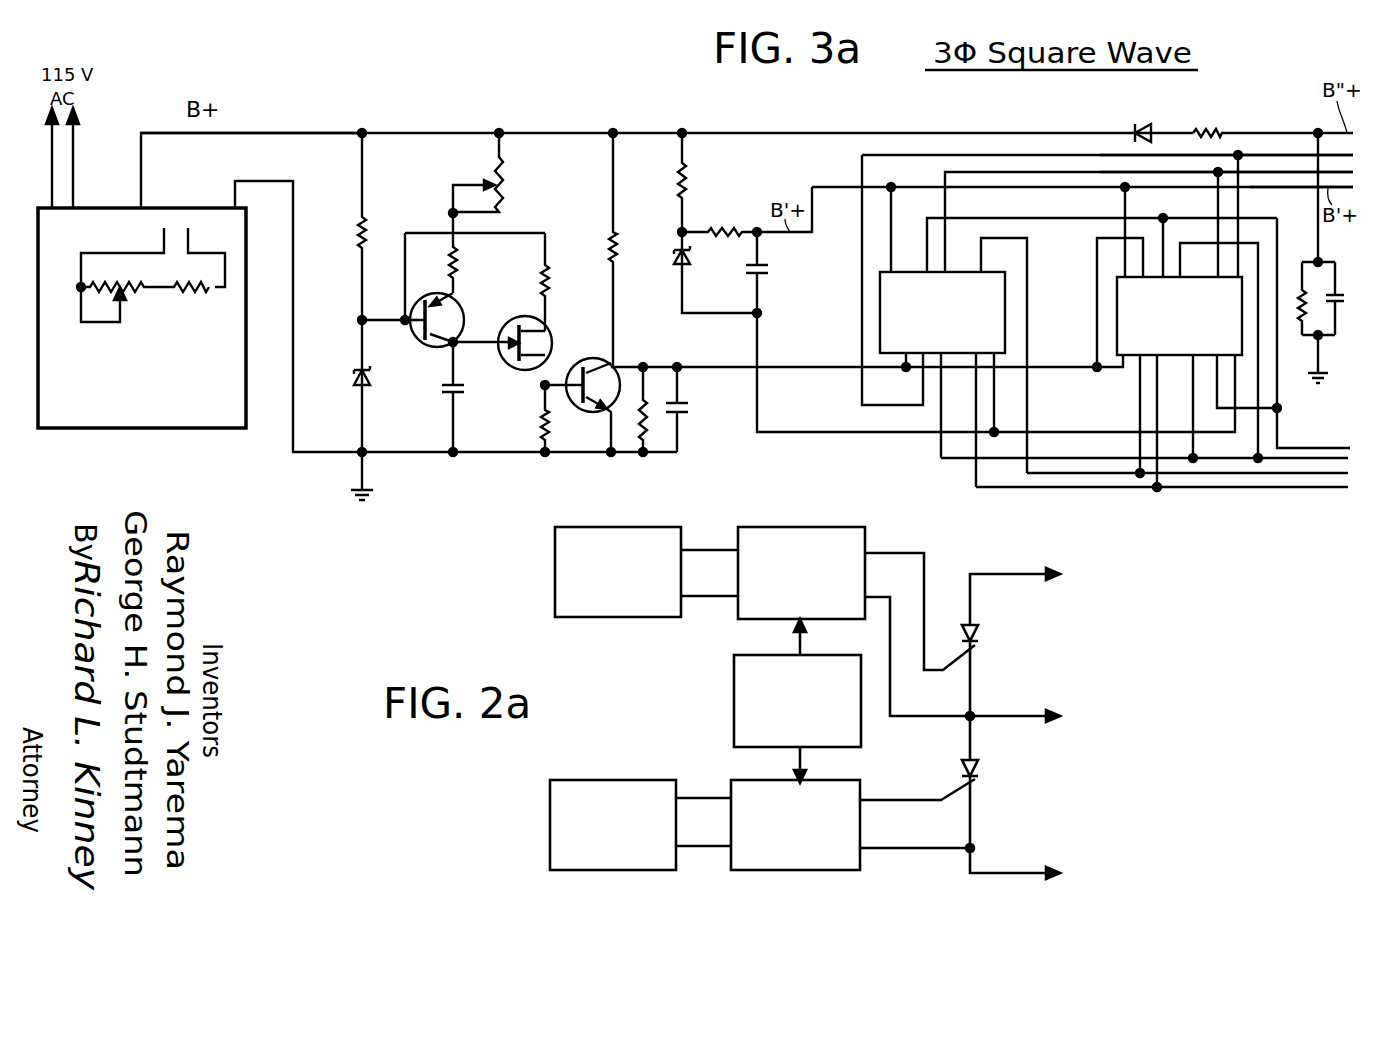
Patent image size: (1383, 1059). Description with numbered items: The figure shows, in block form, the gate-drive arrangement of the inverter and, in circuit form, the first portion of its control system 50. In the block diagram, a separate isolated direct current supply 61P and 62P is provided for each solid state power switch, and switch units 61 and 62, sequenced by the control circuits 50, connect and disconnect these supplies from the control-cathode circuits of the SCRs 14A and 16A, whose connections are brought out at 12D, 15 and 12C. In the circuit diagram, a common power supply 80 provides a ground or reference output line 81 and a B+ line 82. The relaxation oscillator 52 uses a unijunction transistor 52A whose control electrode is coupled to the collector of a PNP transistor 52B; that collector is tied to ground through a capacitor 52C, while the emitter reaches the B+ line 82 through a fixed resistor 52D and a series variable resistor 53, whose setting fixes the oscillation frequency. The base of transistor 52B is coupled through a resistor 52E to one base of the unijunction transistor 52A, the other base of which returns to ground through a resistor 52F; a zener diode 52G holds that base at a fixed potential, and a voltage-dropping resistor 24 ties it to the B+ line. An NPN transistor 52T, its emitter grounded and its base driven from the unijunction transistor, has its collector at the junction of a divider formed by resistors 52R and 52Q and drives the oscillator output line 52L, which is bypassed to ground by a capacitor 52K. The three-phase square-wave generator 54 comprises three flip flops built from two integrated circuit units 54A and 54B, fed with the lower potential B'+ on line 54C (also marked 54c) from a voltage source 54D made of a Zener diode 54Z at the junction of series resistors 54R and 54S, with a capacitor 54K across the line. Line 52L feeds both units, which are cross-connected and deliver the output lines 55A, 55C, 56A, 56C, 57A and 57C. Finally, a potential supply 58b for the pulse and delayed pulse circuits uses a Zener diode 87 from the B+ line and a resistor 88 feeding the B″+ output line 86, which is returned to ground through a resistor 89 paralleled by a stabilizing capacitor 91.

In FIG. 3A, the control circuit 50 is at (634, 118).
In FIG. 2A, the control circuit 50 is at (761, 701).
In FIG. 3A, the oscillator 52 is at (539, 204).
In FIG. 3A, the three-phase square-wave generator 54 is at (1107, 242).
In FIG. 3A, the power supply 80 is at (142, 337).
In FIG. 3A, the output line 81 is at (454, 327).
In FIG. 3A, the B+ line 82 is at (251, 147).
In FIG. 3A, the resistor 24 is at (342, 316).
In FIG. 3A, the zener break-down diode 52G is at (387, 388).
In FIG. 3A, the variable resistor 53 is at (498, 175).
In FIG. 3A, the fixed resistor 52D is at (482, 253).
In FIG. 3A, the PNP transistor 52B is at (438, 309).
In FIG. 3A, the capacitor 52C is at (475, 397).
In FIG. 3A, the unijunction transistor 52A is at (502, 351).
In FIG. 3A, the resistor 52E is at (569, 282).
In FIG. 3A, the resistor 52R is at (586, 250).
In FIG. 3A, the NPN transistor 52T is at (580, 393).
In FIG. 3A, the resistor 52F is at (566, 418).
In FIG. 3A, the oscillator output line 52L is at (867, 350).
In FIG. 3A, the resistor 52Q is at (674, 424).
In FIG. 3A, the capacitor 52K is at (700, 409).
In FIG. 3A, the resistor 54R is at (655, 184).
In FIG. 3A, the voltage source 54D is at (719, 212).
In FIG. 3A, the Zener diode 54Z is at (715, 272).
In FIG. 3A, the capacitor 54K is at (990, 332).
In FIG. 3A, the resistor 54S is at (778, 195).
In FIG. 3A, the B'+ line 54c is at (1078, 167).
In FIG. 3A, the integrated circuit unit 54A is at (1116, 327).
In FIG. 3A, the integrated circuit unit 54B is at (1187, 319).
In FIG. 3A, the Zener diode 87 is at (1137, 125).
In FIG. 3A, the resistor 88 is at (1259, 123).
In FIG. 3A, the output bus 58b is at (1284, 114).
In FIG. 3A, the output line 55A is at (1197, 124).
In FIG. 3A, the output line 55C is at (1226, 141).
In FIG. 3A, the B″+ output line 86 is at (1317, 185).
In FIG. 3A, the B'+ line 54C is at (1301, 202).
In FIG. 3A, the resistor 89 is at (1310, 306).
In FIG. 3A, the voltage stabilizing capacitor 91 is at (1335, 315).
In FIG. 3A, the output line 56A is at (1311, 333).
In FIG. 3A, the output line 56C is at (1144, 500).
In FIG. 3A, the output line 57A is at (1162, 503).
In FIG. 3A, the output line 57C is at (1187, 496).
In FIG. 2A, the direct current supply 61P is at (646, 549).
In FIG. 2A, the switch unit 61 is at (856, 598).
In FIG. 2A, the direct current supply 62P is at (640, 805).
In FIG. 2A, the switch unit 62 is at (853, 833).
In FIG. 2A, the output terminal 12D is at (1028, 573).
In FIG. 2A, the SCR 14A is at (1019, 670).
In FIG. 2A, the output terminal 15 is at (1013, 713).
In FIG. 2A, the SCR 16A is at (1019, 804).
In FIG. 2A, the output terminal 12C is at (1017, 850).